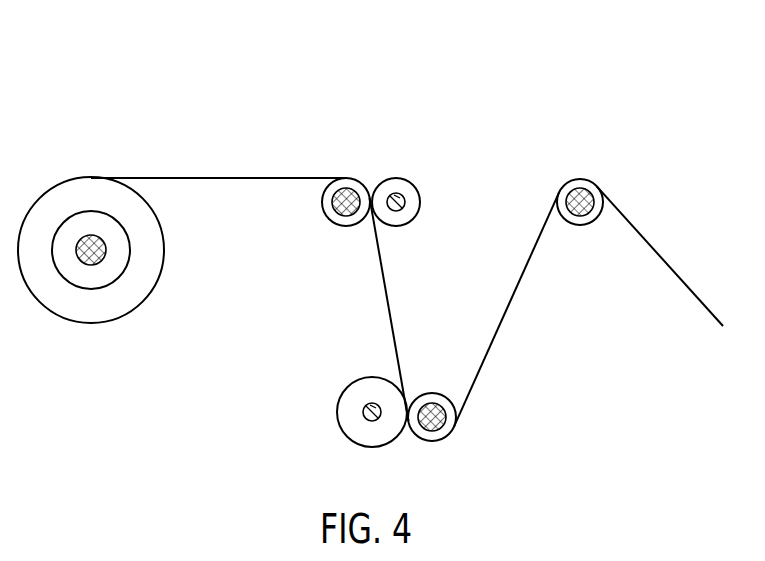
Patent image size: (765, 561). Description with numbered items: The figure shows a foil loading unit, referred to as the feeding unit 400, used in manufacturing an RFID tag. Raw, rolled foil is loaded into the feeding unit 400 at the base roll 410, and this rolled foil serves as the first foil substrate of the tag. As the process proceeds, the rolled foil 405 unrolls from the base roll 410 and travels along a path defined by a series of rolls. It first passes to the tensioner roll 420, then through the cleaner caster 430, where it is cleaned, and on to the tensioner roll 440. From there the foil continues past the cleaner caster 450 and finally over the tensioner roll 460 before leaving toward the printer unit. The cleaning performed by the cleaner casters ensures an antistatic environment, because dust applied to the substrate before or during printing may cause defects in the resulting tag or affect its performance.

The feeding unit 400 is at (80, 97).
The rolled foil 405 is at (698, 302).
The base roll 410 is at (163, 264).
The tensioner roll 420 is at (353, 178).
The cleaner caster 430 is at (413, 221).
The tensioner roll 440 is at (445, 393).
The cleaner caster 450 is at (353, 439).
The tensioner roll 460 is at (568, 180).